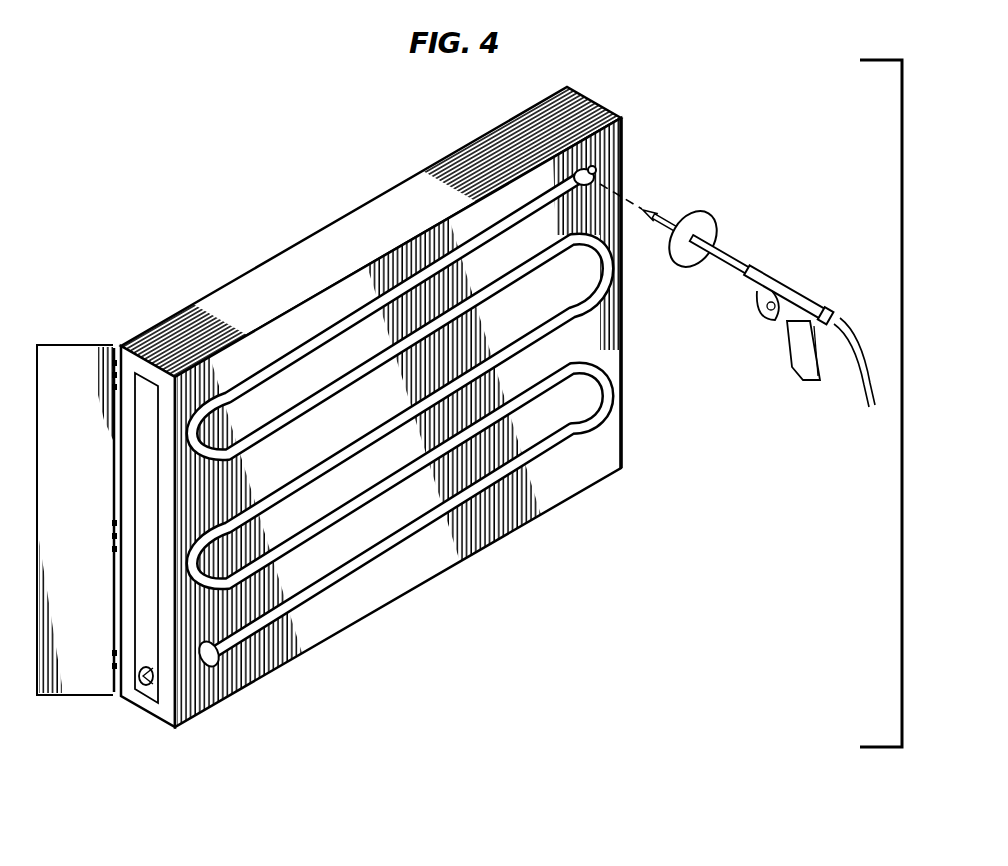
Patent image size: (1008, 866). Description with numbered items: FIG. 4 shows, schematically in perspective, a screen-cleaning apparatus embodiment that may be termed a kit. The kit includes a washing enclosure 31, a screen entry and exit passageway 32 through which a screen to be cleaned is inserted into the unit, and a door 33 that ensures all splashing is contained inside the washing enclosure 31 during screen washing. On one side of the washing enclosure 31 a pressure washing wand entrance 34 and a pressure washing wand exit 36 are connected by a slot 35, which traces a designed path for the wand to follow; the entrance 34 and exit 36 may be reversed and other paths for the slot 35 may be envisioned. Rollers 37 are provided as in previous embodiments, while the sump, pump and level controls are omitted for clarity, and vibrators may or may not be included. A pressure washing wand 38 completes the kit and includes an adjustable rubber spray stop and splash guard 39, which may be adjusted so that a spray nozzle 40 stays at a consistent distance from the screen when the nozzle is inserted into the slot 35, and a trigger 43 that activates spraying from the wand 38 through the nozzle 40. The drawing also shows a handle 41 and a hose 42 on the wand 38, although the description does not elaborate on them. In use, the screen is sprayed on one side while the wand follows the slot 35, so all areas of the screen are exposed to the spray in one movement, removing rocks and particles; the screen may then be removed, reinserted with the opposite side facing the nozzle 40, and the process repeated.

The washing enclosure 31 is at (380, 430).
The screen entry and exit passageway 32 is at (138, 400).
The door 33 is at (91, 523).
The pressure washing wand entrance 34 is at (592, 175).
The slot 35 is at (400, 242).
The pressure washing wand exit 36 is at (218, 668).
The rollers 37 is at (140, 688).
The pressure washing wand 38 is at (758, 288).
The adjustable rubber spray stop and splash guard 39 is at (677, 263).
The spray nozzle 40 is at (652, 210).
The handle 41 is at (750, 298).
The supply hose 42 is at (833, 314).
The trigger 43 is at (768, 308).